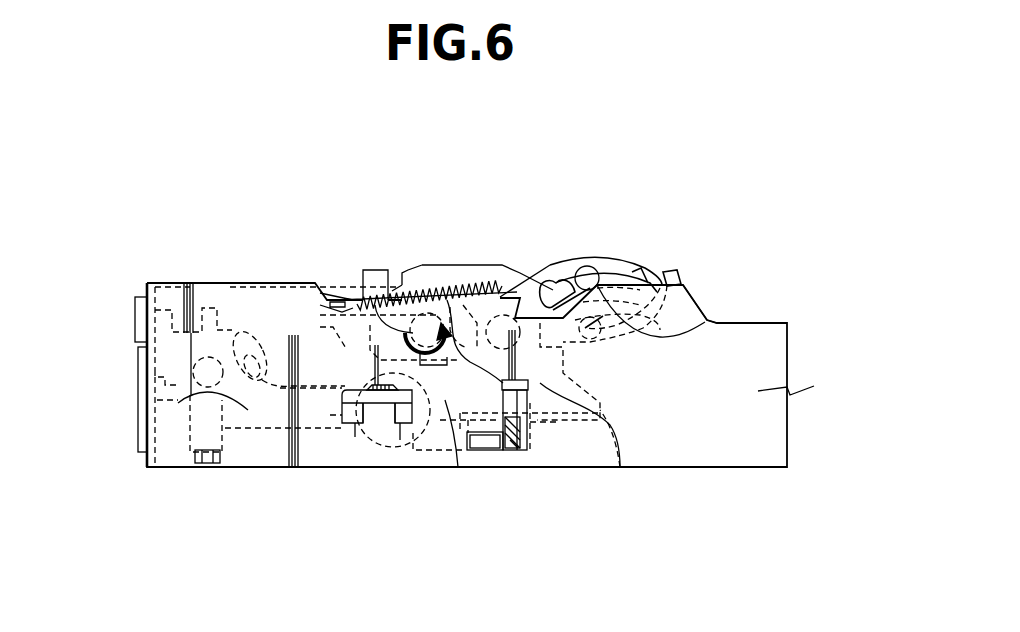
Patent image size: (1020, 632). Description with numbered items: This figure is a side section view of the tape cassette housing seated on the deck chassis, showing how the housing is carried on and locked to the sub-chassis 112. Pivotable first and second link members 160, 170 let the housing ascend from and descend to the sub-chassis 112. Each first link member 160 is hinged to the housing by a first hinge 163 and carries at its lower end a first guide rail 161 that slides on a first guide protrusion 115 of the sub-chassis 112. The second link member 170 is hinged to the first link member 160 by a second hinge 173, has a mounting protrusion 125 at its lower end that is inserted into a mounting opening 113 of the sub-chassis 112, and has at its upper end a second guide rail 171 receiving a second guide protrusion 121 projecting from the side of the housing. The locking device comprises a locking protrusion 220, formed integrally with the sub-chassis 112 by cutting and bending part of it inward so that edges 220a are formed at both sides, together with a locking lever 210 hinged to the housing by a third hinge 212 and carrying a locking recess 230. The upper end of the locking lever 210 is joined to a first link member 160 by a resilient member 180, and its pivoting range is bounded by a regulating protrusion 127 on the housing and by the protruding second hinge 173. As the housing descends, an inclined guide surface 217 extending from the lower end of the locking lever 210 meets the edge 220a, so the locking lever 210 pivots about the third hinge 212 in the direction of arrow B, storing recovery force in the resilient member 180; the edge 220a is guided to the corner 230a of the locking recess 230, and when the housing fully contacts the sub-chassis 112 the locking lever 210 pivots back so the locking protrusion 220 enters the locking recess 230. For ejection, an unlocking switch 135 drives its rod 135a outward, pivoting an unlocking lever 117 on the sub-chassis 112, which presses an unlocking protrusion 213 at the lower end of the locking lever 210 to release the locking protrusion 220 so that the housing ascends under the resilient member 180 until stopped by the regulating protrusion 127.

The sub-chassis 112 is at (728, 453).
The mounting opening 113 is at (202, 465).
The first guide protrusion 115 is at (688, 310).
The unlocking lever 117 is at (513, 455).
The second guide protrusion 121 is at (574, 257).
The mounting protrusion 125 is at (207, 458).
The regulating protrusion 127 is at (408, 282).
The unlocking switch 135 is at (393, 467).
The rod 135a is at (468, 467).
The first link member 160 is at (527, 262).
The first guide rail 161 is at (722, 320).
The first hinge 163 is at (445, 258).
The second link member 170 is at (153, 403).
The second guide rail 171 is at (606, 256).
The second hinge 173 is at (622, 467).
The resilient member 180 is at (470, 262).
The locking lever 210 is at (458, 467).
The third hinge 212 is at (375, 306).
The unlocking protrusion 213 is at (530, 397).
The guide surface 217 is at (395, 423).
The locking protrusion 220 is at (352, 427).
The edge 220a is at (363, 408).
The locking recess 230 is at (333, 257).
The corner 230a is at (380, 423).
The direction arrow B is at (360, 381).